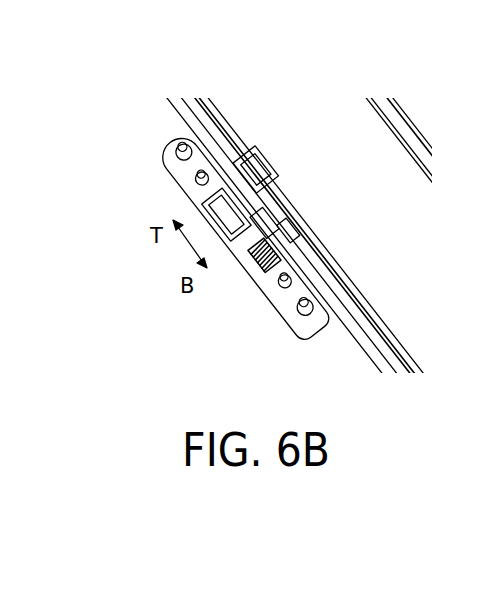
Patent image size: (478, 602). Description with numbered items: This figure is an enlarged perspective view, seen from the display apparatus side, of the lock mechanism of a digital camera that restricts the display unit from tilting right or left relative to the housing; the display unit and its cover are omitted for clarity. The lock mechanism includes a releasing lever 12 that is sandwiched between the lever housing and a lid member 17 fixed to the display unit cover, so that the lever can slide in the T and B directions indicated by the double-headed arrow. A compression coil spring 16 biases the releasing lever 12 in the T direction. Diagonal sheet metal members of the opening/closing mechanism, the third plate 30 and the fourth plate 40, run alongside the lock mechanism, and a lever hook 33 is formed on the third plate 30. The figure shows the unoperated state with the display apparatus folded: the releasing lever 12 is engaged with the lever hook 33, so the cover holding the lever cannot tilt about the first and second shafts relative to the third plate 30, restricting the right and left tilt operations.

The releasing lever 12 is at (236, 262).
The compression coil spring 16 is at (247, 306).
The lid member 17 is at (205, 237).
The third plate 30 is at (325, 200).
The lever hook 33 is at (307, 112).
The fourth plate 40 is at (247, 244).